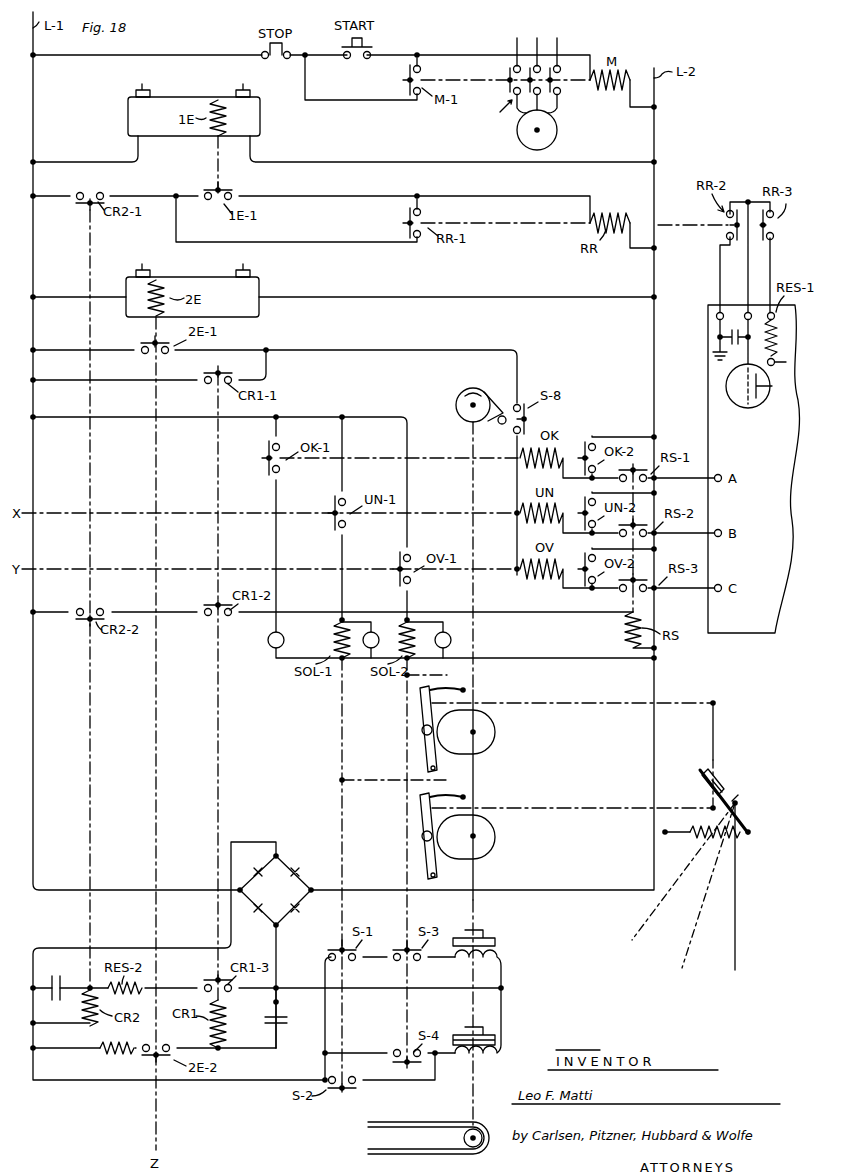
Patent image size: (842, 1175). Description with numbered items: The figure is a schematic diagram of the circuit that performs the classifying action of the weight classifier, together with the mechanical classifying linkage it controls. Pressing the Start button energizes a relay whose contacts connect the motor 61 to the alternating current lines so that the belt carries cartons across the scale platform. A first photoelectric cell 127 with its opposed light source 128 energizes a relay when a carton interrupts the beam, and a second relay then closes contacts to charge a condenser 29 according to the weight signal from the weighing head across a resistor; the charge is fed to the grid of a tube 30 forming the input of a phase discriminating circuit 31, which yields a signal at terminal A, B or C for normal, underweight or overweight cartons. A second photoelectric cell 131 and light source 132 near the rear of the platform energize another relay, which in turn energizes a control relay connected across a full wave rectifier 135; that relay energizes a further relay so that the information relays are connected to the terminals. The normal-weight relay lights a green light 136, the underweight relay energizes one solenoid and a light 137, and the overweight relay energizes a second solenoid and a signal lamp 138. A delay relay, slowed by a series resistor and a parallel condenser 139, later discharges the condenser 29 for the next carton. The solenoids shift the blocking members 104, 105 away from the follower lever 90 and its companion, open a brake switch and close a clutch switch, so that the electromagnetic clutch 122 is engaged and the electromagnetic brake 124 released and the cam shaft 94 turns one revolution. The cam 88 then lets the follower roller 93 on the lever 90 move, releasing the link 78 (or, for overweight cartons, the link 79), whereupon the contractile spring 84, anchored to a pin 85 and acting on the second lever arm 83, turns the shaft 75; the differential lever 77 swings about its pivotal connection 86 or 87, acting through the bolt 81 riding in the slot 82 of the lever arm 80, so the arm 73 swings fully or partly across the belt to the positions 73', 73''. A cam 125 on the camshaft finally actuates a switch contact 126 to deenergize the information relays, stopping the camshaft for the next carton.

The condenser 29 is at (724, 336).
The tube 30 is at (736, 406).
The phase discriminating circuit 31 is at (772, 400).
The motor 61 is at (557, 134).
The arm 73 is at (754, 886).
The lever first position 73' is at (691, 885).
The lever second position 73'' is at (666, 871).
The shaft 75 is at (742, 804).
The differential lever 77 is at (716, 736).
The link 78 is at (588, 810).
The link 79 is at (548, 704).
The lever arm 80 is at (738, 796).
The bolt 81 is at (720, 776).
The slot 82 is at (706, 770).
The second lever arm 83 is at (752, 832).
The contractile spring 84 is at (694, 836).
The pin 85 is at (664, 832).
The pivotal connection 86 is at (714, 704).
The pivotal connection 87 is at (708, 806).
The cam 88 is at (450, 856).
The lever 90 is at (424, 816).
The follower roller 93 is at (418, 834).
The cam shaft 94 is at (490, 888).
The blocking member 104 is at (462, 791).
The blocking member 105 is at (462, 688).
The electromagnetic clutch 122 is at (503, 1042).
The electromagnetic brake 124 is at (505, 945).
The cam 125 is at (500, 396).
The timer contact 126 is at (502, 424).
The photoelectric cell 127 is at (244, 90).
The light source 128 is at (146, 88).
The second sensing element 131 is at (242, 268).
The light source 132 is at (143, 268).
The full wave rectifier 135 is at (294, 867).
The light 136 is at (270, 644).
The light 137 is at (371, 623).
The signal lamp 138 is at (443, 626).
The condenser 139 is at (70, 972).